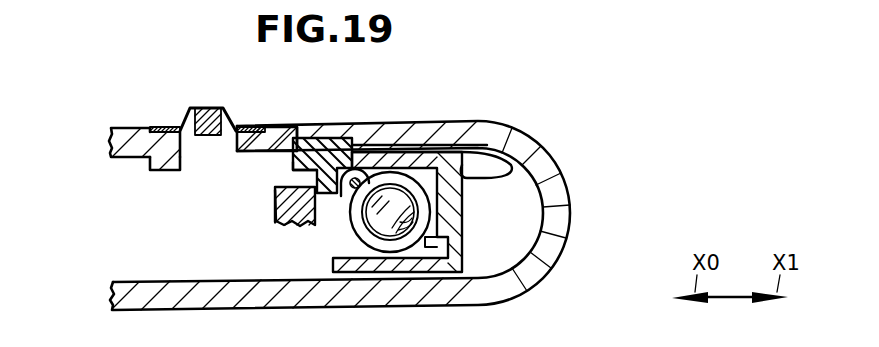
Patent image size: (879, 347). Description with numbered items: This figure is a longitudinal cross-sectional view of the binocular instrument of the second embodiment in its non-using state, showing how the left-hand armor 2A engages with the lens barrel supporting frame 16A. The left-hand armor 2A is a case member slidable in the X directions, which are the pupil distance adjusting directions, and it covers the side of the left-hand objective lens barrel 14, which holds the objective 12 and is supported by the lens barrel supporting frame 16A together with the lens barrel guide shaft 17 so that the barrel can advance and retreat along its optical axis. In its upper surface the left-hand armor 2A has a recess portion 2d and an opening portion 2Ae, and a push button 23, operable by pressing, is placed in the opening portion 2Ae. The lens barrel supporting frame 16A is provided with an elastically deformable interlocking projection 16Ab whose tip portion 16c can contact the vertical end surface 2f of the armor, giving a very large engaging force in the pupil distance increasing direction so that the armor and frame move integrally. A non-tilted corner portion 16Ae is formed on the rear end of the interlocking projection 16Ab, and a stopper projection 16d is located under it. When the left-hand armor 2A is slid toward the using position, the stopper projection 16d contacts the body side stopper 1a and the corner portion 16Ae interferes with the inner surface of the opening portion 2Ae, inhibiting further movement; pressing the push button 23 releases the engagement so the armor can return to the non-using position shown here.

The left-hand armor 2A is at (558, 178).
The opening portion 2Ae is at (168, 138).
The vertical end surface 2f is at (183, 159).
The push button 23 is at (218, 107).
The recess portion 2d is at (302, 150).
The interlocking projection 16Ab is at (327, 143).
The tip portion 16c is at (293, 168).
The lens barrel supporting frame 16A is at (512, 150).
The corner portion 16Ae is at (388, 150).
The lens barrel guide shaft 17 is at (442, 144).
The stopper projection 16d is at (320, 183).
The body side stopper 1a is at (280, 203).
The left-hand objective lens barrel 14 is at (430, 213).
The objective 12 is at (392, 238).